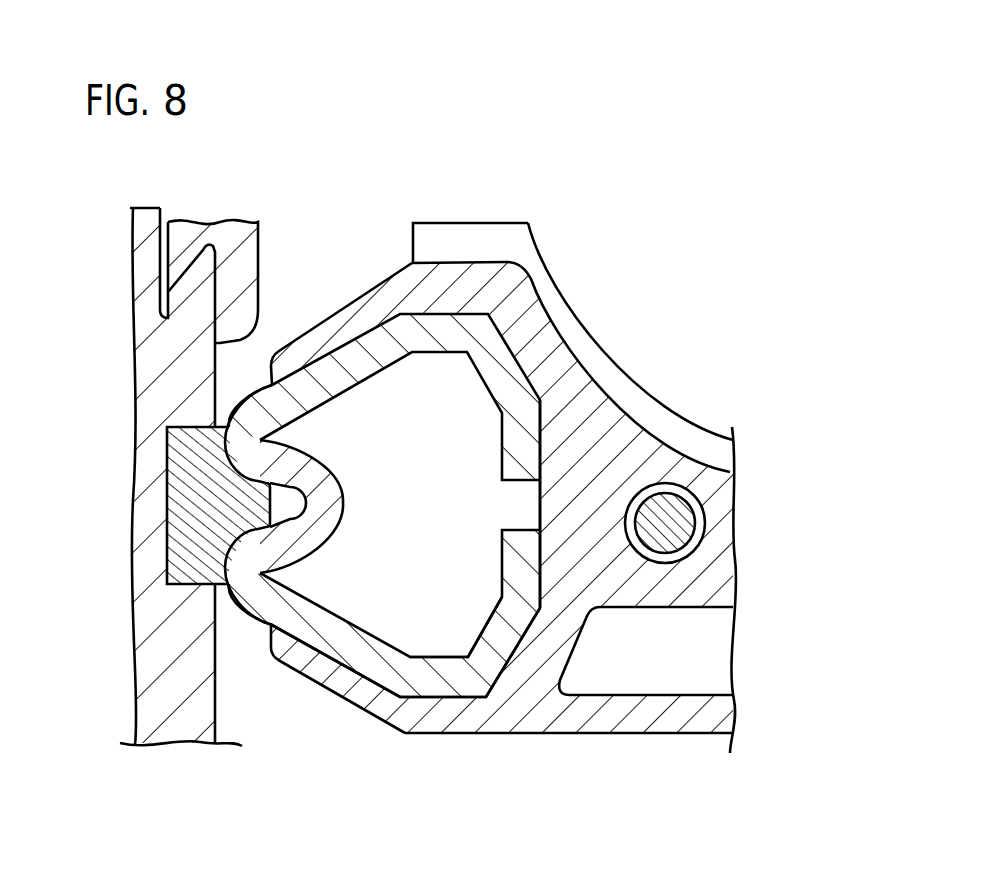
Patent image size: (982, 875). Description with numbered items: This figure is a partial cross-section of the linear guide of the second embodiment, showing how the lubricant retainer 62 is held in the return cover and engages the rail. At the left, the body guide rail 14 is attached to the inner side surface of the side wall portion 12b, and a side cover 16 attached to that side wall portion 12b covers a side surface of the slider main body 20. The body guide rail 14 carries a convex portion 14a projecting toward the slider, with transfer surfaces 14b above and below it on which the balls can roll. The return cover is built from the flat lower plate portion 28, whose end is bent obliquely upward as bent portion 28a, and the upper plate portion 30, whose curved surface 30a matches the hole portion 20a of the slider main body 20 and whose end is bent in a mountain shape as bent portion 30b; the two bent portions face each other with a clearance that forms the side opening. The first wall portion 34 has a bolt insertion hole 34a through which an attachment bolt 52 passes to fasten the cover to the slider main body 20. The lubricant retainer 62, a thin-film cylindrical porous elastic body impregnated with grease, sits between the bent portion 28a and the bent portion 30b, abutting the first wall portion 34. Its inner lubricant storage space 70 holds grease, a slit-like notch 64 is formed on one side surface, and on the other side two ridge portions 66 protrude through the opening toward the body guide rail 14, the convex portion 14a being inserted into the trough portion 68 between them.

The side wall portion 12b is at (170, 683).
The body guide rail 14 is at (193, 507).
The convex portion 14a is at (253, 506).
The transfer surface 14b is at (232, 420).
The side cover 16 is at (247, 260).
The slider main body 20 is at (472, 240).
The hole portion 20a is at (557, 293).
The lower plate portion 28 is at (657, 717).
The bent portion 28a is at (314, 670).
The upper plate portion 30 is at (567, 382).
The curved surface 30a is at (668, 415).
The bent portion 30b is at (385, 303).
The first wall portion 34 is at (542, 645).
The bolt insertion hole 34a is at (627, 532).
The attachment bolt 52 is at (673, 538).
The lubricant retainer 62 is at (377, 657).
The notch 64 is at (515, 513).
The ridge portion 66 is at (238, 452).
The trough portion 68 is at (308, 482).
The lubricant storage space 70 is at (423, 612).